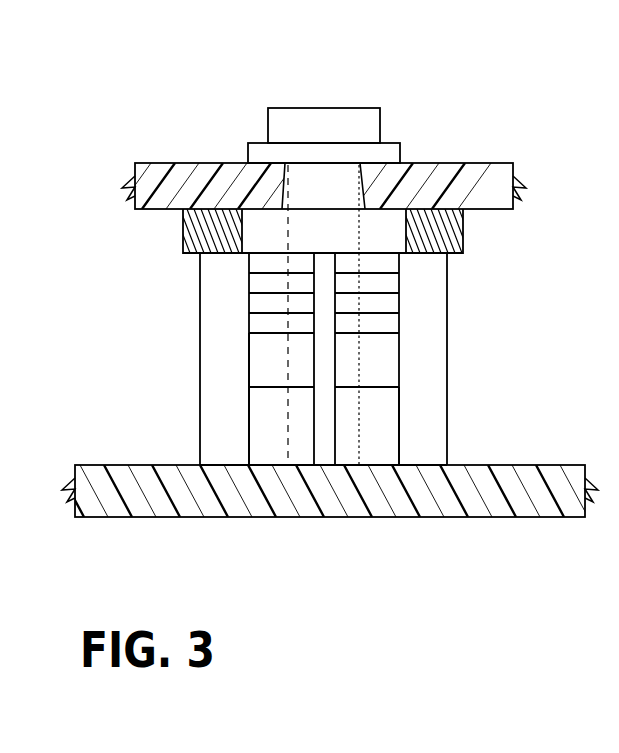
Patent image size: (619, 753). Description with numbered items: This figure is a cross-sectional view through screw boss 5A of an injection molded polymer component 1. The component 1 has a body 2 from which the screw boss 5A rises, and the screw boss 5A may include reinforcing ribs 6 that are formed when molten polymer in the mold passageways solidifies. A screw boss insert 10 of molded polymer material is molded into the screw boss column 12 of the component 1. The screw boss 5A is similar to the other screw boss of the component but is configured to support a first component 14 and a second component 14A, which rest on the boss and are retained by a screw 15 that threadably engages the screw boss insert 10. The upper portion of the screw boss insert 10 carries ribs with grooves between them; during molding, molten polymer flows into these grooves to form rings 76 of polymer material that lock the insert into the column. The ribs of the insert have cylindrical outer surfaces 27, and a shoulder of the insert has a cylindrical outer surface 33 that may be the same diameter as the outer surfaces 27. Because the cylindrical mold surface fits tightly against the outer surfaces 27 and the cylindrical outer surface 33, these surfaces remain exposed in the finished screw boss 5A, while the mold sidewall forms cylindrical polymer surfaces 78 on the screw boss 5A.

The component 1 is at (457, 422).
The body 2 is at (495, 463).
The screw boss 5A is at (448, 353).
The reinforcing ribs 6 is at (437, 293).
The screw boss insert 10 is at (267, 353).
The screw boss column 12 is at (270, 422).
The first component 14 is at (468, 163).
The second component 14A is at (463, 232).
The screw 15 is at (382, 128).
The outer surfaces 27 is at (375, 263).
The cylindrical outer surface 33 is at (380, 365).
The rings 76 is at (267, 280).
The cylindrical polymer surfaces 78 is at (367, 440).